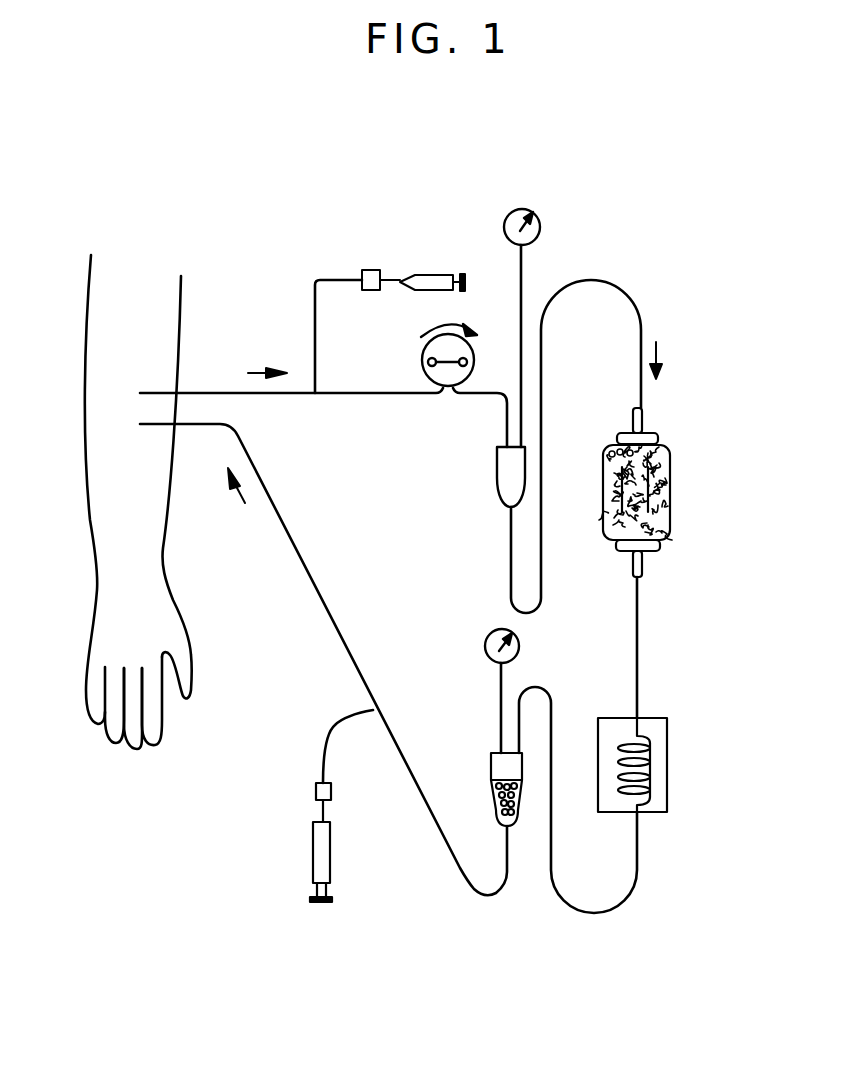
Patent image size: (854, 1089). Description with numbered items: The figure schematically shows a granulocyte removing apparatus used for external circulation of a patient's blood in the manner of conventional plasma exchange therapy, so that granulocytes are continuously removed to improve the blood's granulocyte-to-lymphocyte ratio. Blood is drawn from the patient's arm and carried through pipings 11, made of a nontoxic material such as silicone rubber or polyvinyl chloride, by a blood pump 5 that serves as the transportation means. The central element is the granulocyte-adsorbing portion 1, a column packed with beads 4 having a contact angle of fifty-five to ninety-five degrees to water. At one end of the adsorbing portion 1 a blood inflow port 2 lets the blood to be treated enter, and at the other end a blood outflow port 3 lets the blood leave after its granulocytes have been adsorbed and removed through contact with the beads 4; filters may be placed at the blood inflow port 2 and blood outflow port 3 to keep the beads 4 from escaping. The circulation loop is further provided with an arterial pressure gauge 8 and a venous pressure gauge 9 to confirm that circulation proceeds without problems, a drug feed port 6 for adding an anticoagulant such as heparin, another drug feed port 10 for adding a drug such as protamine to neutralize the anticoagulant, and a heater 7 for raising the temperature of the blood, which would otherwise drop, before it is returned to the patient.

The granulocyte-adsorbing portion 1 is at (659, 491).
The blood inflow port 2 is at (660, 437).
The blood outflow port 3 is at (671, 567).
The beads 4 is at (614, 446).
The blood pump 5 is at (422, 360).
The drug feed port 6 is at (428, 272).
The heater 7 is at (667, 762).
The arterial pressure gauge 8 is at (541, 222).
The venous pressure gauge 9 is at (485, 648).
The drug feed port 10 is at (313, 848).
The pipings 11 is at (357, 395).